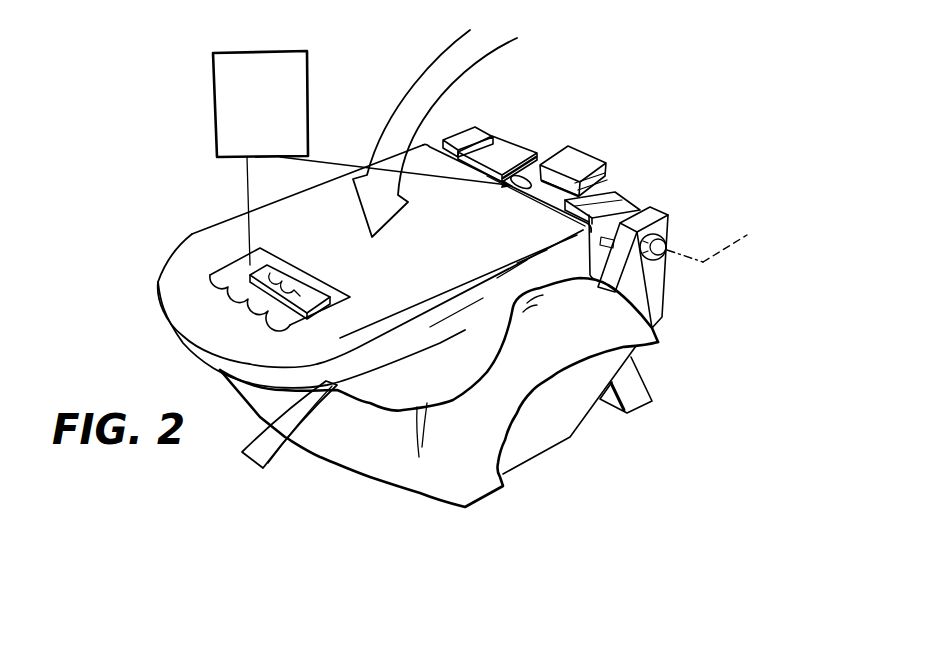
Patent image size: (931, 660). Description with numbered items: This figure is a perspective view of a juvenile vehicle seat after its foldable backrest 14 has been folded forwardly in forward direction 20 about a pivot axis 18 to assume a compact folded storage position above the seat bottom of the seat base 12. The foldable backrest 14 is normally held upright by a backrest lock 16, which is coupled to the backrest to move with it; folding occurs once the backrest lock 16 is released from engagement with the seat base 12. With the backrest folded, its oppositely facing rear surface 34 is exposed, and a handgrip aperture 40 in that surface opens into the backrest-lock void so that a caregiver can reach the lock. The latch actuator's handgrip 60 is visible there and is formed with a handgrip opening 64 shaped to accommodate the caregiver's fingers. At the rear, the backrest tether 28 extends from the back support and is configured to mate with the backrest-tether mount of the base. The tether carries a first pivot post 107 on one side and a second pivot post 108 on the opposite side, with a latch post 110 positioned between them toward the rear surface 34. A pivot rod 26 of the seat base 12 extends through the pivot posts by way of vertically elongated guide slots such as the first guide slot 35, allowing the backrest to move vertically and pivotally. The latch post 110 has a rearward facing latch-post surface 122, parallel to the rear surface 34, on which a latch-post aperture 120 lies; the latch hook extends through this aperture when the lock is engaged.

The seat base 12 is at (586, 430).
The foldable backrest 14 is at (191, 228).
The backrest lock 16 is at (316, 81).
The pivot axis 18 is at (724, 243).
The forward direction 20 is at (384, 127).
The pivot rod 26 is at (628, 190).
The backrest tether 28 is at (652, 160).
The rear surface 34 is at (468, 248).
The first guide slot 35 is at (660, 275).
The handgrip aperture 40 is at (237, 258).
The handgrip 60 is at (300, 290).
The handgrip opening 64 is at (297, 278).
The first pivot post 107 is at (652, 206).
The second pivot post 108 is at (507, 157).
The latch post 110 is at (573, 160).
The latch-post aperture 120 is at (537, 178).
The rearward facing latch-post surface 122 is at (600, 157).